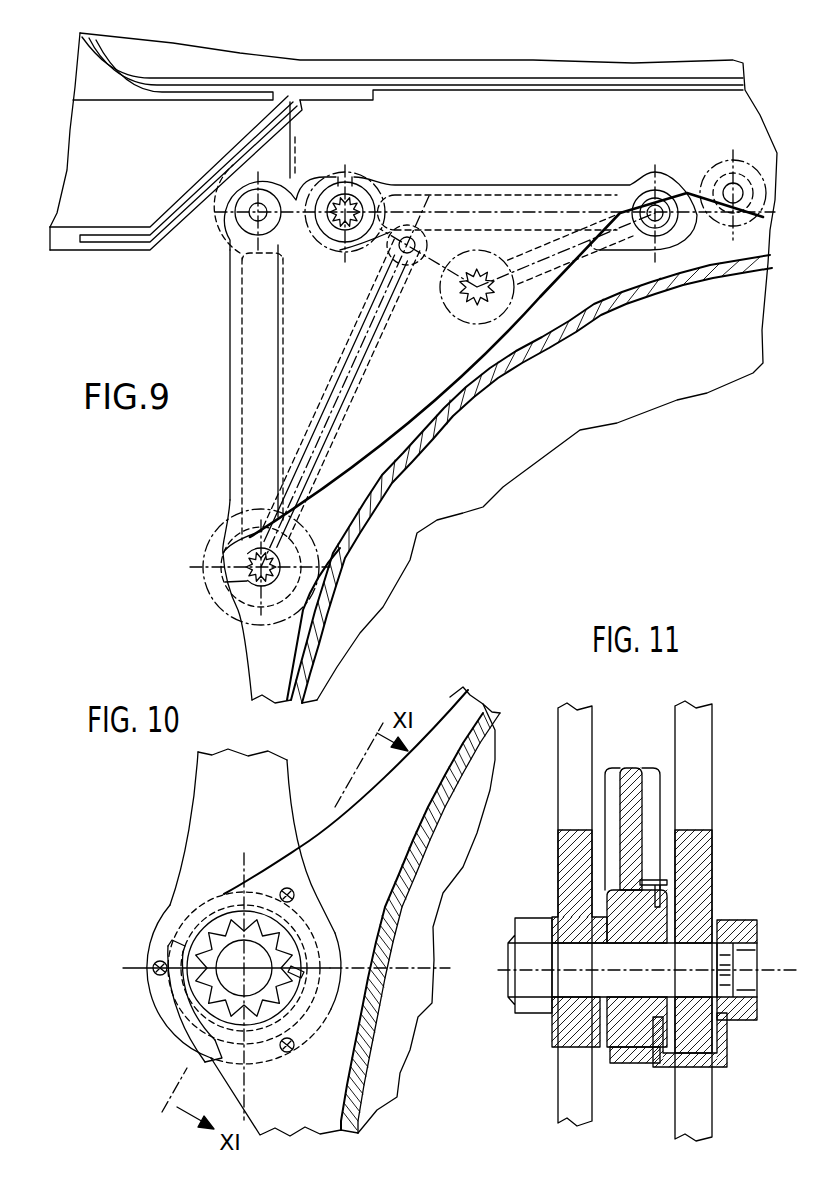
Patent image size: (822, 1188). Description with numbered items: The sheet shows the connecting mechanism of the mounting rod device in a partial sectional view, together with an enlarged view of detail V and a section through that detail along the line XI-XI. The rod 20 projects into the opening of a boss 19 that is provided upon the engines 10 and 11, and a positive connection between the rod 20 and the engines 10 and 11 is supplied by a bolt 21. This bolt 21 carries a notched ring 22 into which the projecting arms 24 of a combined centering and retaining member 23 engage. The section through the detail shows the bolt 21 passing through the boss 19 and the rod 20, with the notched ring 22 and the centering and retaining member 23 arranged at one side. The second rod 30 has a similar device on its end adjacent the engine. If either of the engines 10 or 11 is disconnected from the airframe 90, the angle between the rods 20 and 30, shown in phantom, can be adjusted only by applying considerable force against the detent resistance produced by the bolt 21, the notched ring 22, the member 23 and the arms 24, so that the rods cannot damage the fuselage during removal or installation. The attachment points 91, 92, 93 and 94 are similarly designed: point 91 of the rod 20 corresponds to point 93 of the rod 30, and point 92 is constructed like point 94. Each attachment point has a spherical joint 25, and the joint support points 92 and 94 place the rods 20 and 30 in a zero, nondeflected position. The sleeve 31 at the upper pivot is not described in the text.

In FIG. 9, the engine 10 is at (413, 368).
In FIG. 10, the engine 10 is at (428, 910).
In FIG. 9, the engine 11 is at (616, 407).
In FIG. 10, the engine 11 is at (463, 807).
In FIG. 9, the boss 19 is at (713, 217).
In FIG. 11, the boss 19 is at (567, 739).
In FIG. 9, the rod 20 is at (250, 315).
In FIG. 10, the rod 20 is at (217, 781).
In FIG. 11, the rod 20 is at (642, 811).
In FIG. 10, the bolt 21 is at (237, 976).
In FIG. 11, the bolt 21 is at (687, 955).
In FIG. 10, the notched ring 22 is at (170, 957).
In FIG. 11, the notched ring 22 is at (733, 940).
In FIG. 10, the combined centering and retaining member 23 is at (200, 1040).
In FIG. 11, the combined centering and retaining member 23 is at (727, 1063).
In FIG. 10, the projecting arms 24 is at (302, 974).
In FIG. 11, the spherical joint 25 is at (635, 1040).
In FIG. 9, the rod 30 is at (498, 207).
In FIG. 9, the pivot sleeve 31 is at (373, 190).
In FIG. 9, the airframe 90 is at (192, 227).
In FIG. 9, the attachment point 91 is at (232, 593).
In FIG. 9, the attachment point 92 is at (240, 222).
In FIG. 9, the attachment point 93 is at (340, 205).
In FIG. 9, the attachment point 94 is at (650, 207).